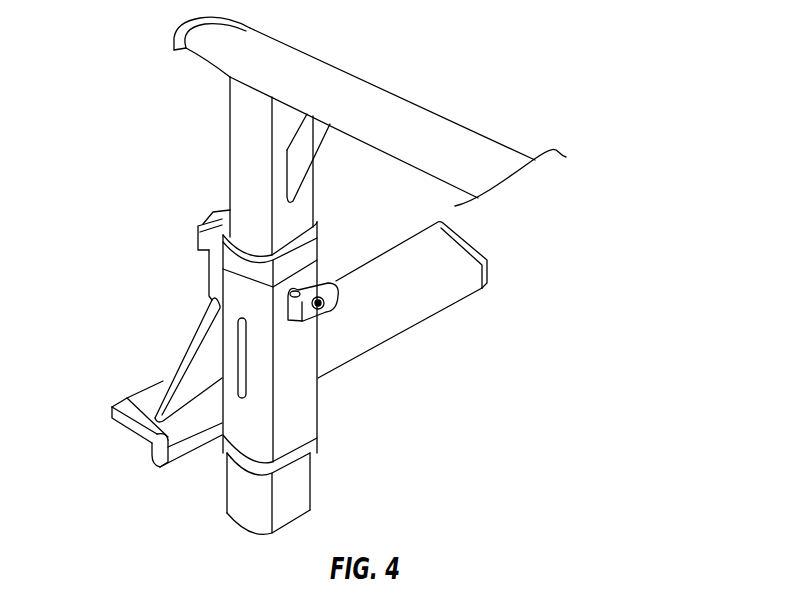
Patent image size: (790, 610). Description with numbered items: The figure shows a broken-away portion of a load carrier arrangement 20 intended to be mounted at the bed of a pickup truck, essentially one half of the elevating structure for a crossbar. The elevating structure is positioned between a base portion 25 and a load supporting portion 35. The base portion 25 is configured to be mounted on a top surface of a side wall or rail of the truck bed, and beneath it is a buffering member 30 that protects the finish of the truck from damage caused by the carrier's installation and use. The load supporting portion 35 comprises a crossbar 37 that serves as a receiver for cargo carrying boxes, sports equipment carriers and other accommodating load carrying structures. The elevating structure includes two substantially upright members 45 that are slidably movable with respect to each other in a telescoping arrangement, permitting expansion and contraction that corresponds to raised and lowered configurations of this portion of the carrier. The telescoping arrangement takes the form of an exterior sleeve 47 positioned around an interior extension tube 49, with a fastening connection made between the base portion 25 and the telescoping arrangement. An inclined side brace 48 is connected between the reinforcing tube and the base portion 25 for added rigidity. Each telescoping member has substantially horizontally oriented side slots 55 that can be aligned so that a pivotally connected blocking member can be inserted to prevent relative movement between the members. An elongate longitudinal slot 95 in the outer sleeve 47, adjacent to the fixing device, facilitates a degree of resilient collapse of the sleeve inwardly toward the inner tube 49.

The load carrier arrangement 20 is at (96, 108).
The base portion 25 is at (449, 348).
The buffering member 30 is at (111, 450).
The load supporting portion 35 is at (184, 83).
The crossbar 37 is at (416, 108).
The upright members 45 is at (324, 206).
The exterior sleeve 47 is at (303, 410).
The inclined side brace 48 is at (197, 371).
The extension tube 49 is at (240, 156).
The side slots 55 is at (288, 312).
The longitudinal slot 95 is at (237, 367).